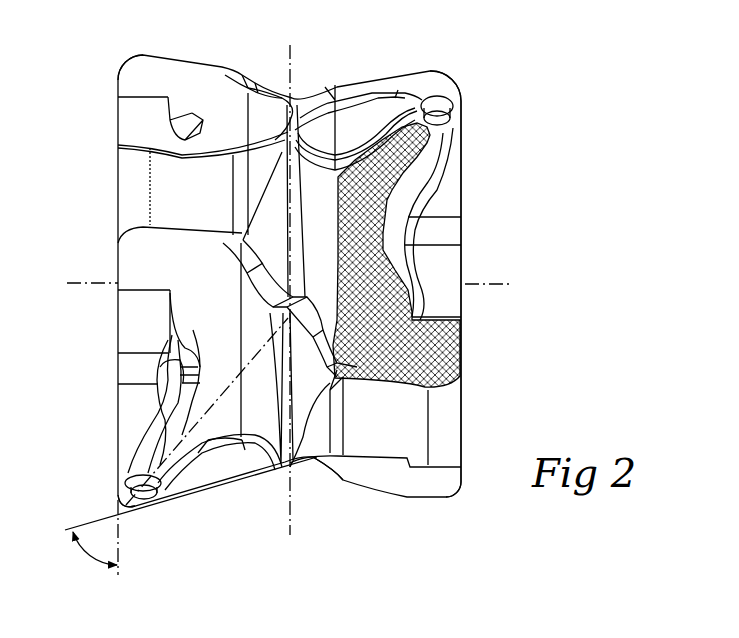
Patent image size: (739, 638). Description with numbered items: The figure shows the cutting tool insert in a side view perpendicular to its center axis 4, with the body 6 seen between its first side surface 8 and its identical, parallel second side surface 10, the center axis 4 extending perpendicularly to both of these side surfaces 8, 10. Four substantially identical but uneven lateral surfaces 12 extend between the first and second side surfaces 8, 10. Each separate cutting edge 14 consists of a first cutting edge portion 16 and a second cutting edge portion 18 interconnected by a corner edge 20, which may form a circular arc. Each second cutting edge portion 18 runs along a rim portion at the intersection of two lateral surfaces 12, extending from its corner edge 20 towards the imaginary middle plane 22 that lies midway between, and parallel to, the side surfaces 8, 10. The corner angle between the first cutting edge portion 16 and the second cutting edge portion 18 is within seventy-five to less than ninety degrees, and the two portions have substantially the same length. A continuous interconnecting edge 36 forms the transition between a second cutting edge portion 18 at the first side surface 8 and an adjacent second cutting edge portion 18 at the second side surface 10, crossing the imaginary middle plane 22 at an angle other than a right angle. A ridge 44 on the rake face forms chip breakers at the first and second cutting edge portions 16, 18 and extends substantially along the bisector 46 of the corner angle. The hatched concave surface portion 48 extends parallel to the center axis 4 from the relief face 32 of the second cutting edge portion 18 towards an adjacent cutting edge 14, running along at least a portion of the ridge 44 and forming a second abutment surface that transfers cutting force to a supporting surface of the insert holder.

The center axis 4 is at (86, 283).
The body 6 is at (452, 262).
The first side surface 8 is at (114, 158).
The second side surface 10 is at (466, 140).
The lateral surface 12 is at (280, 241).
The cutting edge 14 is at (197, 0).
The first cutting edge portion 16 is at (117, 443).
The second cutting edge portion 18 is at (175, 155).
The corner edge 20 is at (133, 517).
The imaginary middle plane 22 is at (292, 45).
The relief face 32 is at (400, 435).
The continuous interconnecting edge 36 is at (315, 458).
The ridge 44 is at (410, 145).
The bisector 46 is at (220, 393).
The concave surface portion 48 is at (415, 336).